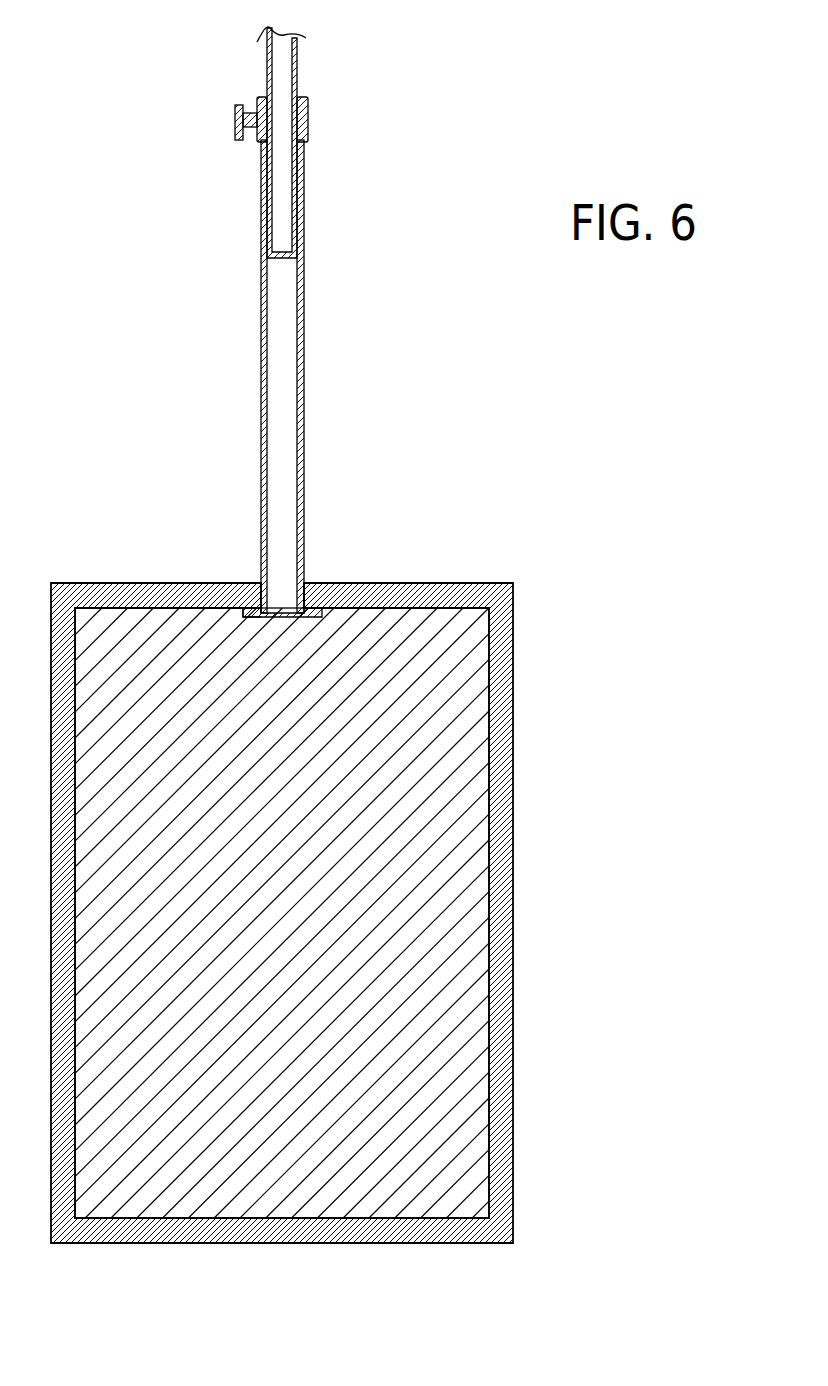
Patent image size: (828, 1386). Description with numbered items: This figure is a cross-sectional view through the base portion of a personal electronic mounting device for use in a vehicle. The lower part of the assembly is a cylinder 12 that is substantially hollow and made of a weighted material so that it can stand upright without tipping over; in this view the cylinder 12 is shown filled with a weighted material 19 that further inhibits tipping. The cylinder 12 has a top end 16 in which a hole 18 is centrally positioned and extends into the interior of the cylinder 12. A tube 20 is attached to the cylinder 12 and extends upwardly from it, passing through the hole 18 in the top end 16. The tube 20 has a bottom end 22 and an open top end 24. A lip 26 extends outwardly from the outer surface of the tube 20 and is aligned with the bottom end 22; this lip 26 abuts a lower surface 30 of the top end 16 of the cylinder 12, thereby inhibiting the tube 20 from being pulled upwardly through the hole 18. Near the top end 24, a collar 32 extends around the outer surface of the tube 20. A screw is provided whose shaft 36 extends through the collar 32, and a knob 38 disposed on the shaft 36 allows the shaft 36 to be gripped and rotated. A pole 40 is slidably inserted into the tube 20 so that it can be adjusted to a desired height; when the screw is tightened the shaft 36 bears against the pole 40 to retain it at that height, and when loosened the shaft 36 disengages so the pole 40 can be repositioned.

The cylinder 12 is at (552, 545).
The top end 16 is at (456, 583).
The hole 18 is at (268, 605).
The weighted material 19 is at (134, 655).
The tube 20 is at (263, 422).
The bottom end 22 is at (282, 618).
The top end 24 is at (304, 95).
The lip 26 is at (243, 611).
The lower surface 30 is at (446, 610).
The collar 32 is at (308, 122).
The shaft 36 is at (257, 117).
The knob 38 is at (239, 140).
The pole 40 is at (297, 68).